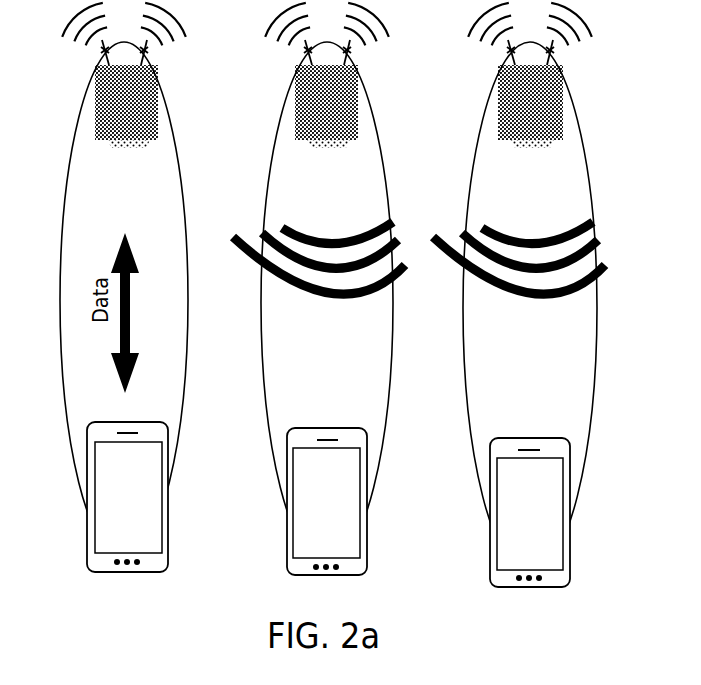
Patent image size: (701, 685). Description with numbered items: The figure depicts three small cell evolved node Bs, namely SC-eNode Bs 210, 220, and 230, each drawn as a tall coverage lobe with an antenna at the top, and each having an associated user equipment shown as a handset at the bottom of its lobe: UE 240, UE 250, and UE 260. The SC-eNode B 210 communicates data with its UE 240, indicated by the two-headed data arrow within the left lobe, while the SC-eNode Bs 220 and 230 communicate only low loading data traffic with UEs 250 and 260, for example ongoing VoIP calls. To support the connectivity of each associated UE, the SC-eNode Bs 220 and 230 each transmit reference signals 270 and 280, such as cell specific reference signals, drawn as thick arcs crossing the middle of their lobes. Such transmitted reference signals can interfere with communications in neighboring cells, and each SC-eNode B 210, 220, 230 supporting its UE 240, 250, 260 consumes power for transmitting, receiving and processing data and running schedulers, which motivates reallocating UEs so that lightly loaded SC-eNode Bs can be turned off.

The SC-eNode B 210 is at (124, 280).
The SC-eNode B 220 is at (327, 283).
The SC-eNode B 230 is at (530, 288).
The UE 240 is at (127, 514).
The UE 250 is at (327, 520).
The UE 260 is at (530, 530).
The reference signal 270 is at (319, 277).
The reference signal 280 is at (519, 277).